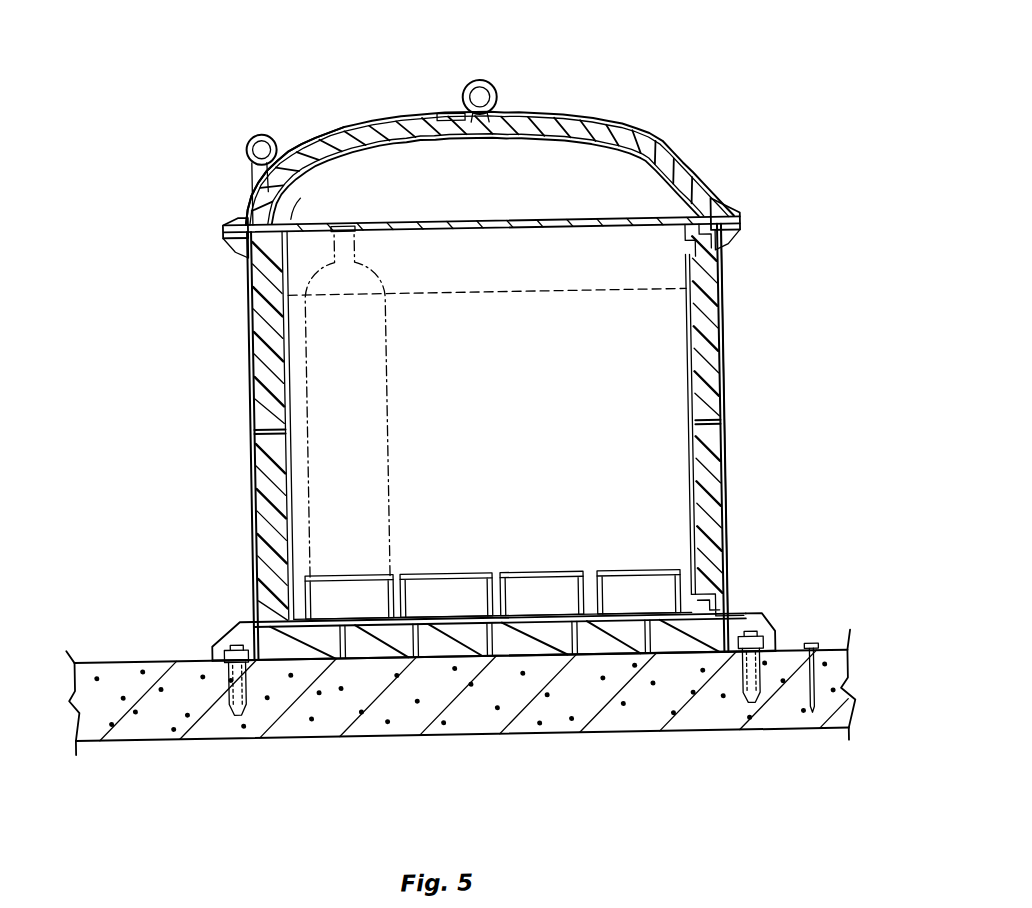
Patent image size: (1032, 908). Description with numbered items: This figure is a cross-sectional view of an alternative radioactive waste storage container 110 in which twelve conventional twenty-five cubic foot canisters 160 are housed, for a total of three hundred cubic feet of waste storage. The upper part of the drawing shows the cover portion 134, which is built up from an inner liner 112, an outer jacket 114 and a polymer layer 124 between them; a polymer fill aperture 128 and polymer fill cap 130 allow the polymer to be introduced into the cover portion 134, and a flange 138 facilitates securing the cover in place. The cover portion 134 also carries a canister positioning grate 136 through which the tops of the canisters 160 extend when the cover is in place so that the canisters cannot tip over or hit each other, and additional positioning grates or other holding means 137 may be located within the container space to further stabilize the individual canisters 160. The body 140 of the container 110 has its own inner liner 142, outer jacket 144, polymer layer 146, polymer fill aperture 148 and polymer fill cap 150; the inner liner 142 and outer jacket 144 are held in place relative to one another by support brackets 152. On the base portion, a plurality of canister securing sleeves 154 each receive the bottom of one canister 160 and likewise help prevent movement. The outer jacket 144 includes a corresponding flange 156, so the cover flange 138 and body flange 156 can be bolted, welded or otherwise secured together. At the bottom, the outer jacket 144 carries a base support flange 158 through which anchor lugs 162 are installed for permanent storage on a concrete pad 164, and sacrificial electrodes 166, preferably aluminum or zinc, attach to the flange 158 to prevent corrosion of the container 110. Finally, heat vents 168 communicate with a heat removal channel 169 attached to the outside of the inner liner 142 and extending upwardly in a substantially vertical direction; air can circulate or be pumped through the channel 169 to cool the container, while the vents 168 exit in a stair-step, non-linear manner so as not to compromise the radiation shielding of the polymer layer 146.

The waste storage container 110 is at (651, 88).
The inner liner 112 is at (583, 120).
The outer jacket 114 is at (660, 138).
The polymer layer 124 is at (405, 121).
The polymer fill aperture 128 is at (459, 150).
The polymer fill cap 130 is at (469, 108).
The cover portion 134 is at (325, 134).
The canister positioning grate 136 is at (601, 222).
The holding means 137 is at (472, 296).
The flange 138 is at (239, 210).
The body 140 is at (248, 468).
The inner liner 142 is at (685, 410).
The outer jacket 144 is at (250, 400).
The polymer layer 146 is at (267, 338).
The polymer fill aperture 148 is at (268, 262).
The polymer fill cap 150 is at (312, 194).
The support brackets 152 is at (721, 441).
The canister securing sleeves 154 is at (612, 572).
The flange 156 is at (239, 234).
The base support flange 158 is at (221, 626).
The canisters 160 is at (388, 392).
The anchor lugs 162 is at (233, 698).
The concrete pad 164 is at (296, 719).
The sacrificial electrodes 166 is at (817, 706).
The heat vents 168 is at (709, 250).
The heat removal channel 169 is at (721, 356).